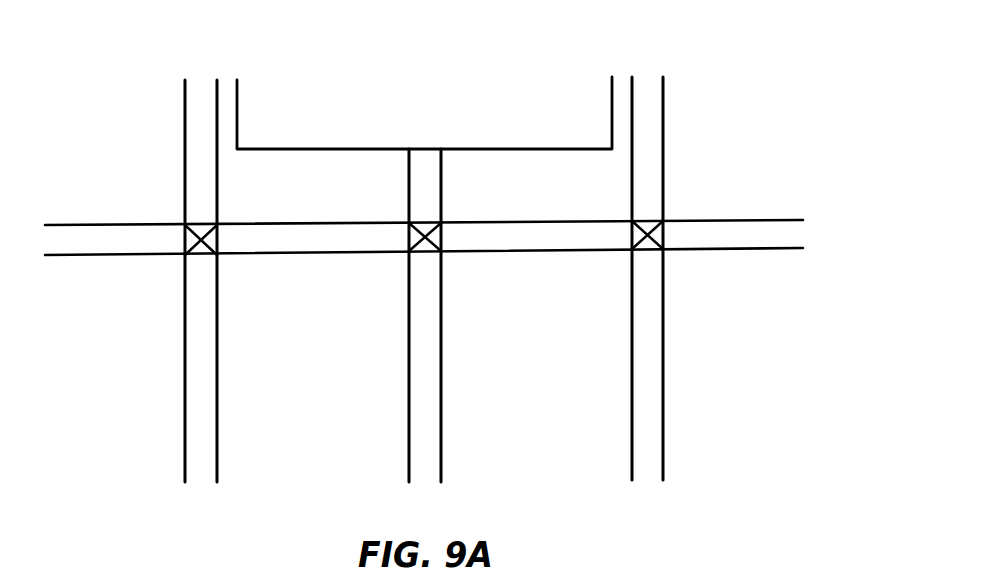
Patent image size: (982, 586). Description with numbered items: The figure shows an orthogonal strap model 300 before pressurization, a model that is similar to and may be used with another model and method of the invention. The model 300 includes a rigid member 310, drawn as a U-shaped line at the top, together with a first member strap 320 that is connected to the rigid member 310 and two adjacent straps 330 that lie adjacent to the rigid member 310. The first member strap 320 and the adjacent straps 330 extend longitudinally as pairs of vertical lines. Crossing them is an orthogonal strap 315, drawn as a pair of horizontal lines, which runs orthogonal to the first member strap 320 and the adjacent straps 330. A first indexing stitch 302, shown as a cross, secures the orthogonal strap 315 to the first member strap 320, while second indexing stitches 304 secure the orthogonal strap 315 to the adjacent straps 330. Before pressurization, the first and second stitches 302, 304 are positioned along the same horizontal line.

The orthogonal strap model 300 is at (604, 50).
The first indexing stitch 302 is at (441, 222).
The second indexing stitches 304 is at (186, 223).
The rigid member 310 is at (612, 118).
The orthogonal strap 315 is at (732, 219).
The first member strap 320 is at (441, 355).
The adjacent straps 330 is at (185, 357).